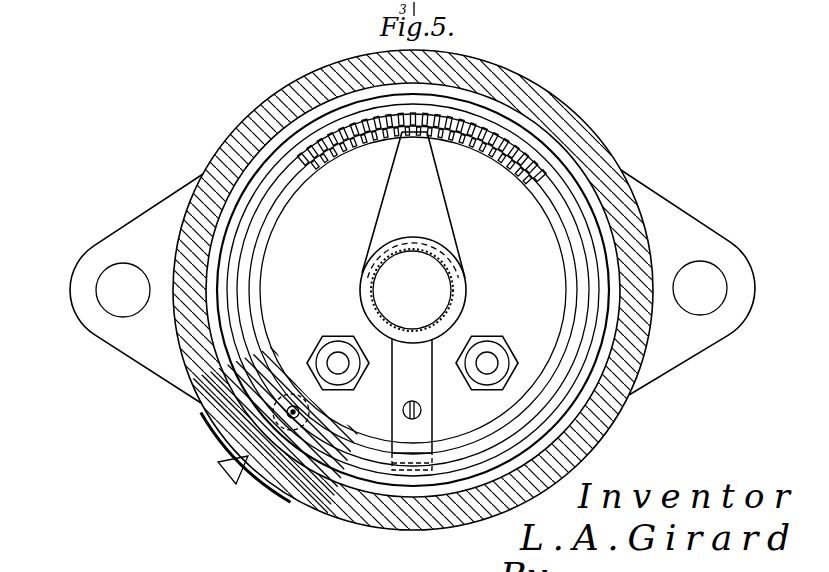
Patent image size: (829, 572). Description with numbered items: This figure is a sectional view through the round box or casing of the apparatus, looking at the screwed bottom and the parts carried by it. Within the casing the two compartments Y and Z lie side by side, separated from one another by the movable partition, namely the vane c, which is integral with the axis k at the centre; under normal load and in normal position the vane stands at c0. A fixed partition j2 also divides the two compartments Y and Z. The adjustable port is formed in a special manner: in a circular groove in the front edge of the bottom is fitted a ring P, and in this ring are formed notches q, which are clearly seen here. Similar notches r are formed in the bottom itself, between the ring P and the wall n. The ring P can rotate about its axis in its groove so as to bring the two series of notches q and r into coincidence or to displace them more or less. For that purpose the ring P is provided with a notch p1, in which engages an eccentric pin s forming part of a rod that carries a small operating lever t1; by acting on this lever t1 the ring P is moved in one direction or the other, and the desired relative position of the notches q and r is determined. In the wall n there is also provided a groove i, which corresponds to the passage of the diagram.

The notches q is at (347, 168).
The notches r is at (352, 163).
The wall n is at (270, 230).
The ring P is at (240, 290).
The compartment Y is at (338, 336).
The compartment Z is at (487, 336).
The axis k is at (412, 290).
The vane c is at (413, 237).
The normal position of vane c0 is at (440, 190).
The groove i is at (497, 160).
The eccentric pin s is at (293, 405).
The notch p1 is at (309, 413).
The pointer stem screw j2 is at (412, 404).
The small operating lever t1 is at (227, 473).